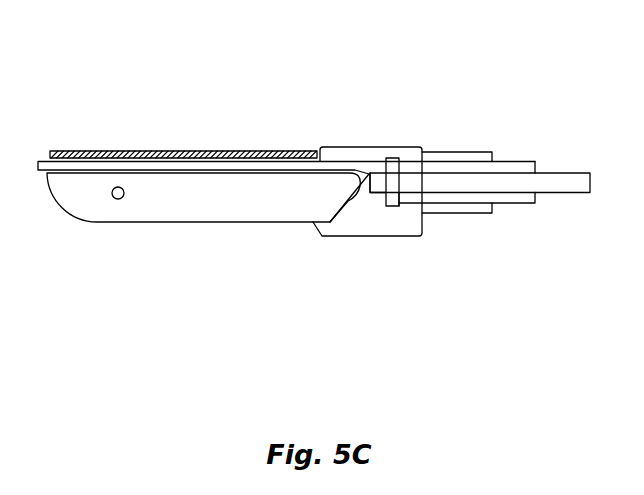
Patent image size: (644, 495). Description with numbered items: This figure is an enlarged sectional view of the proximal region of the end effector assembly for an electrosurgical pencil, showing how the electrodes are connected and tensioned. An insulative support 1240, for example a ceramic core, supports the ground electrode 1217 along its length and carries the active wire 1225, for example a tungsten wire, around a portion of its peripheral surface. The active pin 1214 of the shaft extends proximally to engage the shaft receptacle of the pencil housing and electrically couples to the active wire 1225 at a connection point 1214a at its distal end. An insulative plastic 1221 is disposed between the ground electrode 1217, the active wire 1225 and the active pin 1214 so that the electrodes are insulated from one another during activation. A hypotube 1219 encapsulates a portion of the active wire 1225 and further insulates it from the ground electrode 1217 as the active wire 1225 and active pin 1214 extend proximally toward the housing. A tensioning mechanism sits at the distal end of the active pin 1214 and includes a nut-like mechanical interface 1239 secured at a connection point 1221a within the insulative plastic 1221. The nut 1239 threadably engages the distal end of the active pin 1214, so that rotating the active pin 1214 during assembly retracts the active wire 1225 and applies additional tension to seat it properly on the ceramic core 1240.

The active pin 1214 is at (553, 194).
The connection point 1214a is at (368, 172).
The ground electrode 1217 is at (178, 152).
The hypotube 1219 is at (508, 161).
The insulative plastic 1221 is at (347, 222).
The connection point 1221a is at (390, 208).
The active wire 1225 is at (95, 225).
The nut-like mechanical interface 1239 is at (395, 160).
The insulative support 1240 is at (225, 210).